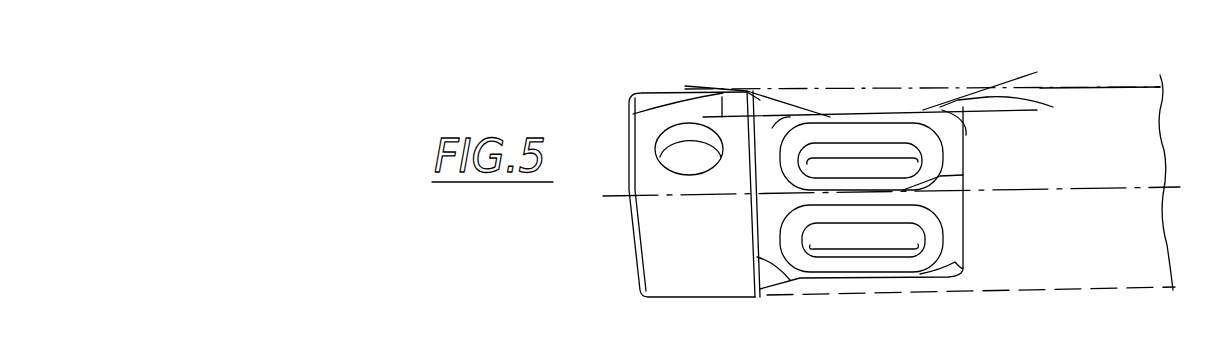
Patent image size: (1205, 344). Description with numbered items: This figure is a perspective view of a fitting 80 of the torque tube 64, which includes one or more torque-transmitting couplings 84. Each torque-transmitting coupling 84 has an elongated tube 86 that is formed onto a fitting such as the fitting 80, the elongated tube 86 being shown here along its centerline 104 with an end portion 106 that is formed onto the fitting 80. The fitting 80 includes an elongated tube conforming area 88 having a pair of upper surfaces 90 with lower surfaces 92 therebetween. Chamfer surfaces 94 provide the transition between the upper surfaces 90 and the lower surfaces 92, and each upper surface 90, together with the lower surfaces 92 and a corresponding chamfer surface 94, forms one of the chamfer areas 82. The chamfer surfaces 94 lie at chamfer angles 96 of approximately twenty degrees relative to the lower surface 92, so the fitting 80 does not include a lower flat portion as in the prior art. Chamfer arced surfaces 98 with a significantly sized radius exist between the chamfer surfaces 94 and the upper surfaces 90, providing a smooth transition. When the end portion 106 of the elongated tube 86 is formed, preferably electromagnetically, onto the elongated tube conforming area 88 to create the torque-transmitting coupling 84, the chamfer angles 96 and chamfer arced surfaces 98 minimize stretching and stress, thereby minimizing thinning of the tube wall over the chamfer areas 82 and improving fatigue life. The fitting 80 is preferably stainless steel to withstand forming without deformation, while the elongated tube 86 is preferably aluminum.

The torque tube 64 is at (868, 88).
The fitting 80 is at (653, 92).
The chamfer areas 82 is at (787, 91).
The torque-transmitting coupling 84 is at (753, 92).
The elongated tube 86 is at (1086, 86).
The elongated tube conforming area 88 is at (915, 46).
The upper surfaces 90 is at (758, 100).
The lower surfaces 92 is at (968, 90).
The chamfer surfaces 94 is at (781, 107).
The chamfer angles 96 is at (636, 113).
The chamfer arced surfaces 98 is at (753, 251).
The centerline 104 is at (1113, 187).
The end portion 106 is at (853, 292).